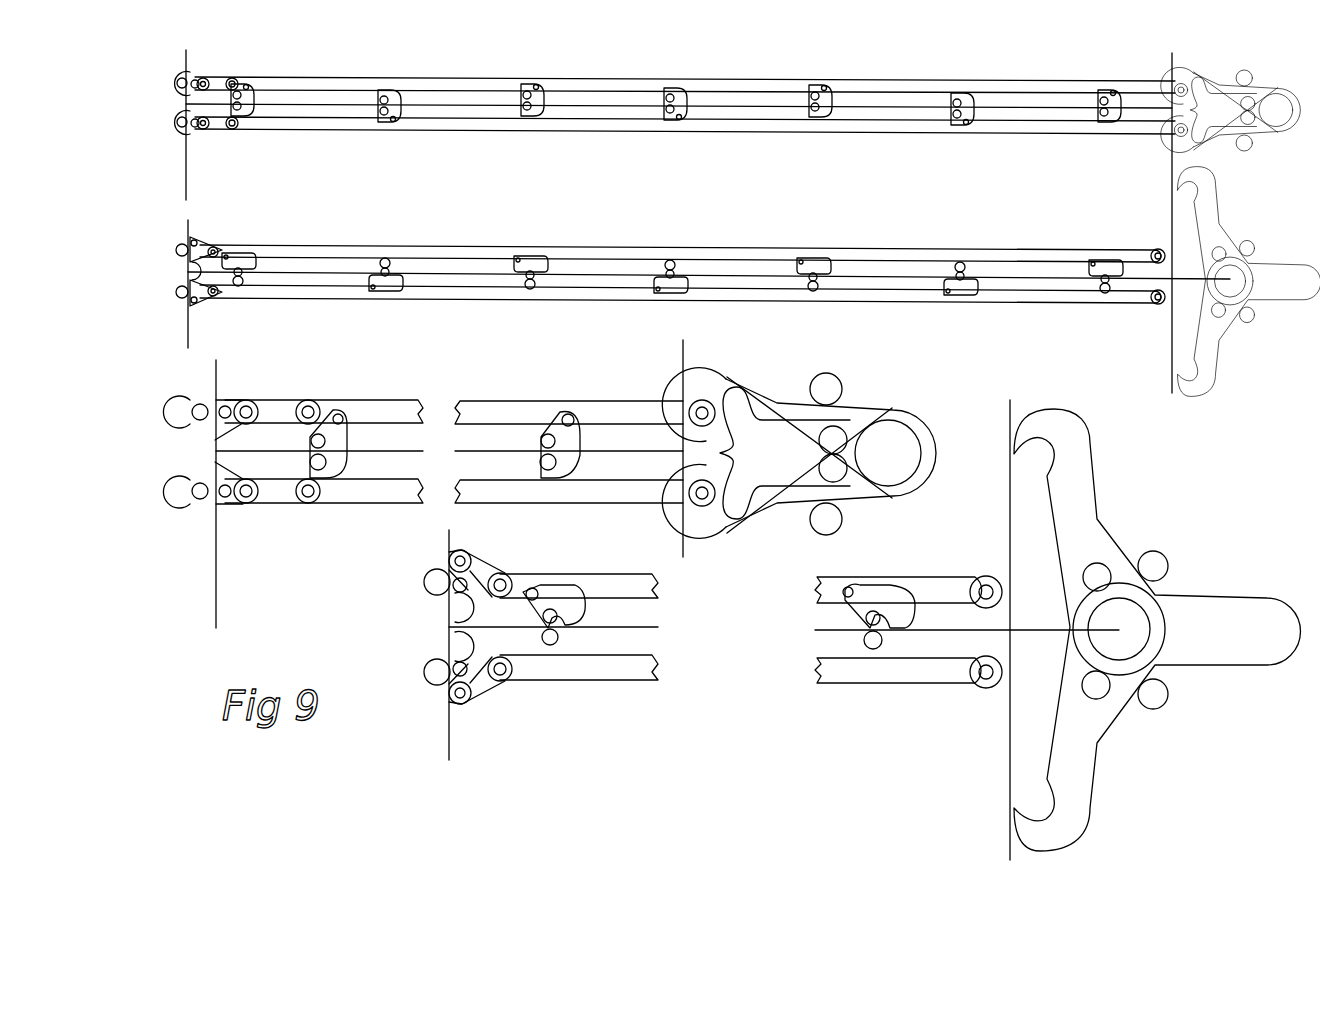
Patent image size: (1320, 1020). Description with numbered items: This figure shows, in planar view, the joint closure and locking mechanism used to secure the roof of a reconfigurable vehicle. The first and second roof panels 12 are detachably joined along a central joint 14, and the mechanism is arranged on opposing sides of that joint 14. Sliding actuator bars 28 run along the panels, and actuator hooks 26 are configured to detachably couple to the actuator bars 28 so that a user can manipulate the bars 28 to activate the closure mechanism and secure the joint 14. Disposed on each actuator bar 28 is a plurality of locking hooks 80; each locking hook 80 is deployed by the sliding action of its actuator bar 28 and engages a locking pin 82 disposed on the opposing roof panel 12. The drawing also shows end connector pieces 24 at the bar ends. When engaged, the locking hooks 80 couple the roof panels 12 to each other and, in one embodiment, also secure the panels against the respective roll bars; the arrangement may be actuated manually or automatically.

The roof panel 12 is at (1022, 93).
The central joint 14 is at (930, 115).
The end connector 24 is at (1205, 145).
The actuator hook 26 is at (1185, 80).
The sliding actuator bar 28 is at (995, 78).
The locking hook 80 is at (1112, 102).
The locking pin 82 is at (1108, 128).